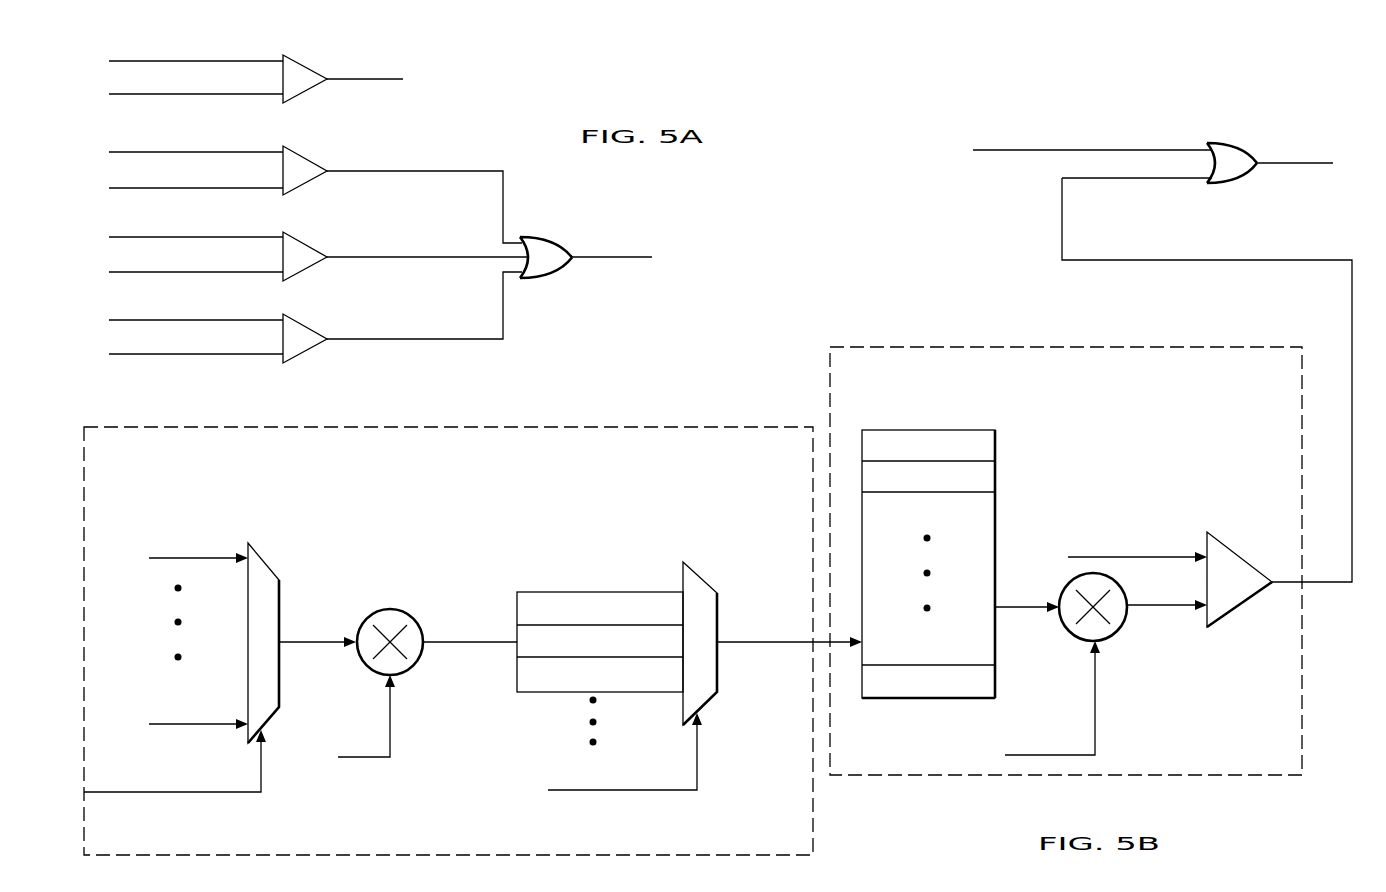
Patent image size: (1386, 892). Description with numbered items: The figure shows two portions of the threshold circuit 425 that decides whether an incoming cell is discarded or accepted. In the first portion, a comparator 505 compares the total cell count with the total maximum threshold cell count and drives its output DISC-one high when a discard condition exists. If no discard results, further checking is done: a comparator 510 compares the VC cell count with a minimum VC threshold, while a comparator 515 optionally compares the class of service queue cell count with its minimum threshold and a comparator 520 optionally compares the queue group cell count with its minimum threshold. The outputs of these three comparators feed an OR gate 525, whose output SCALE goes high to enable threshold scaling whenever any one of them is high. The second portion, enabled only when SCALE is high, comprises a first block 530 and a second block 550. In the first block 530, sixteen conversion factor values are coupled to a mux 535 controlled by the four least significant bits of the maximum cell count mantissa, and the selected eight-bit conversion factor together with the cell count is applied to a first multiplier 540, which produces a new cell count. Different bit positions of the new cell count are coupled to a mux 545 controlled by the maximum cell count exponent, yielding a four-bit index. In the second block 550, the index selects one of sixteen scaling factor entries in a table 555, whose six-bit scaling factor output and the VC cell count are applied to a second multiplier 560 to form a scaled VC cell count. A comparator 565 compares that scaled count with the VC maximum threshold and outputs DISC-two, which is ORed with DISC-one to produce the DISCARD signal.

In FIG. 5A, the threshold circuit 425 is at (686, 193).
In FIG. 5B, the threshold circuit 425 is at (1291, 820).
In FIG. 5A, the comparator 505 is at (305, 63).
In FIG. 5A, the comparator 510 is at (305, 155).
In FIG. 5A, the comparator 515 is at (305, 241).
In FIG. 5A, the comparator 520 is at (305, 323).
In FIG. 5A, the OR gate 525 is at (555, 237).
In FIG. 5B, the first block 530 is at (662, 428).
In FIG. 5B, the mux 535 is at (257, 557).
In FIG. 5B, the first multiplier 540 is at (402, 608).
In FIG. 5B, the mux 545 is at (717, 695).
In FIG. 5B, the second block 550 is at (922, 777).
In FIG. 5B, the table 555 is at (898, 430).
In FIG. 5B, the second multiplier 560 is at (1070, 635).
In FIG. 5B, the comparator 565 is at (1235, 552).